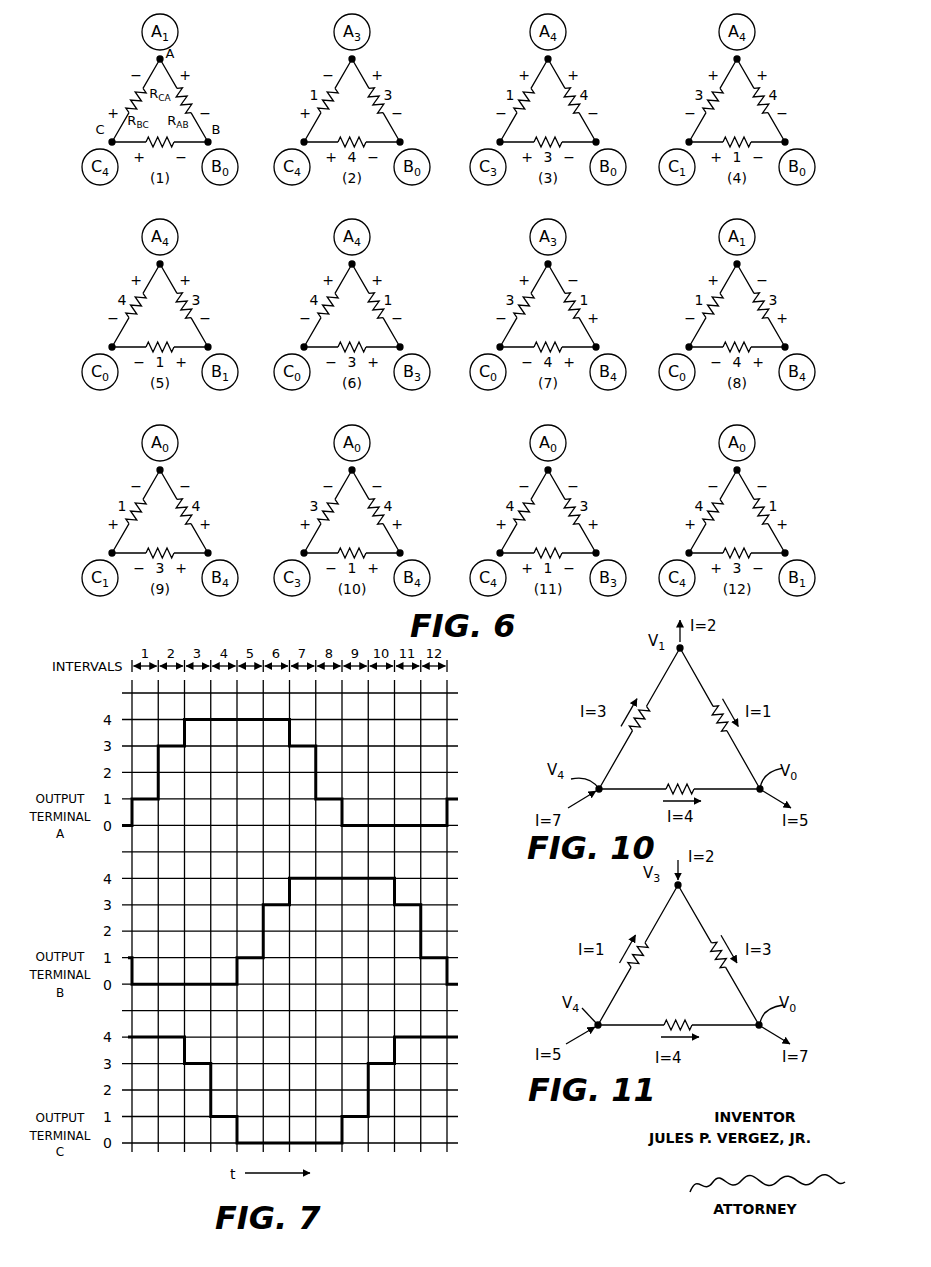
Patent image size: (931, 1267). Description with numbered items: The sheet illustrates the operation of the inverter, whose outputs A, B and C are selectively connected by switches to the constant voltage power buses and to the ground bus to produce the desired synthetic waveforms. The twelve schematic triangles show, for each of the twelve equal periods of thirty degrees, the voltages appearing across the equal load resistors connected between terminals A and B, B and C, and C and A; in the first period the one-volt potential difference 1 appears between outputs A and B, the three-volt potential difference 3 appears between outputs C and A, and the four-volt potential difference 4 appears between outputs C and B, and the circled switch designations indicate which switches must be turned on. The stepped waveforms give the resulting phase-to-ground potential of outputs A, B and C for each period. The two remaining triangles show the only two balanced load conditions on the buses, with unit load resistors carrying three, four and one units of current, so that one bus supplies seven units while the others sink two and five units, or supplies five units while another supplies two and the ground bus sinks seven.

The resistor R_AB 1 is at (187, 100).
The resistor R_CA 3 is at (133, 100).
The resistor R_BC 4 is at (160, 151).